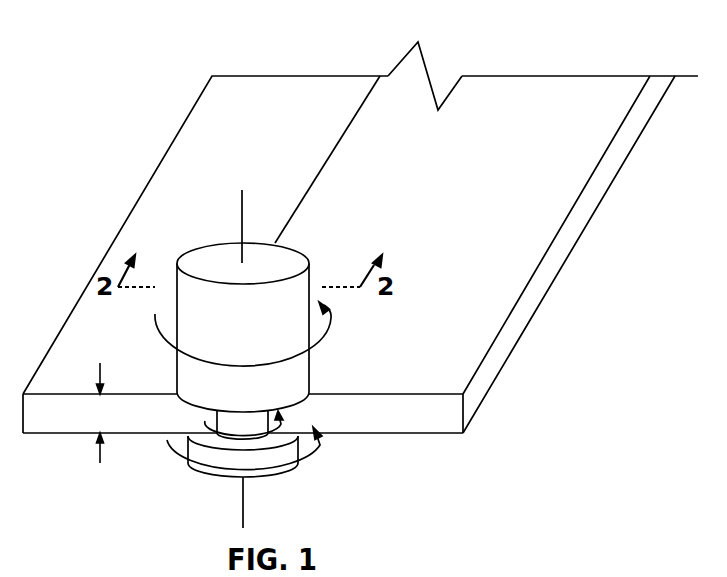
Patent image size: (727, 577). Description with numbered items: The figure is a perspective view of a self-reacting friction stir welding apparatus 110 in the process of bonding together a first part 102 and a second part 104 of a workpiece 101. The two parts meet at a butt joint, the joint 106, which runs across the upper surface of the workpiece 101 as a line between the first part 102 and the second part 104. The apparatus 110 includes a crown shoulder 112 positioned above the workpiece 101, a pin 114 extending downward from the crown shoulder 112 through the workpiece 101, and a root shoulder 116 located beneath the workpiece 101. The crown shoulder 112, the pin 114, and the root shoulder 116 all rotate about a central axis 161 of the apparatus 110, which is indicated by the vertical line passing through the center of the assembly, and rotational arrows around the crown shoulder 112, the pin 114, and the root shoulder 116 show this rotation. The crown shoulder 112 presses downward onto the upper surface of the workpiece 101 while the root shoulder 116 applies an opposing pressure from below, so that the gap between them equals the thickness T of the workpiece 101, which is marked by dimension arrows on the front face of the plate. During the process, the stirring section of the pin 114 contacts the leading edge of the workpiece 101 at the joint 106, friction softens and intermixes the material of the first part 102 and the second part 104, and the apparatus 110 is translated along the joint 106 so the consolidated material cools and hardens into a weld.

The workpiece 101 is at (562, 278).
The first part 102 is at (212, 147).
The second part 104 is at (563, 167).
The joint 106 is at (333, 155).
The self-reacting friction stir welding apparatus 110 is at (200, 232).
The crown shoulder 112 is at (303, 288).
The pin 114 is at (247, 428).
The root shoulder 116 is at (257, 463).
The central axis 161 is at (243, 502).
The thickness T is at (100, 460).